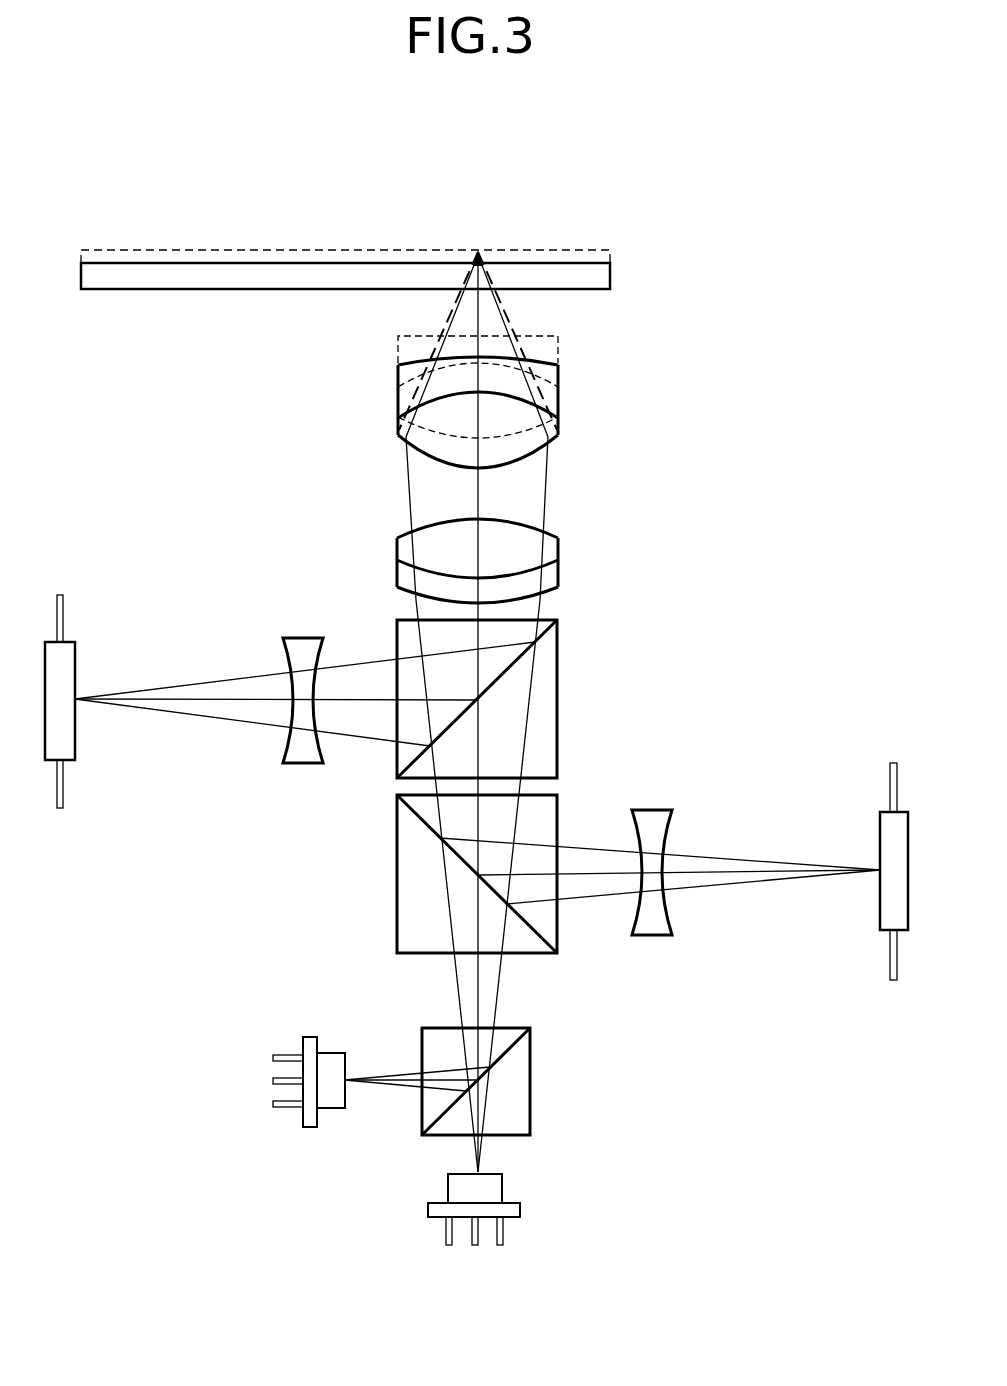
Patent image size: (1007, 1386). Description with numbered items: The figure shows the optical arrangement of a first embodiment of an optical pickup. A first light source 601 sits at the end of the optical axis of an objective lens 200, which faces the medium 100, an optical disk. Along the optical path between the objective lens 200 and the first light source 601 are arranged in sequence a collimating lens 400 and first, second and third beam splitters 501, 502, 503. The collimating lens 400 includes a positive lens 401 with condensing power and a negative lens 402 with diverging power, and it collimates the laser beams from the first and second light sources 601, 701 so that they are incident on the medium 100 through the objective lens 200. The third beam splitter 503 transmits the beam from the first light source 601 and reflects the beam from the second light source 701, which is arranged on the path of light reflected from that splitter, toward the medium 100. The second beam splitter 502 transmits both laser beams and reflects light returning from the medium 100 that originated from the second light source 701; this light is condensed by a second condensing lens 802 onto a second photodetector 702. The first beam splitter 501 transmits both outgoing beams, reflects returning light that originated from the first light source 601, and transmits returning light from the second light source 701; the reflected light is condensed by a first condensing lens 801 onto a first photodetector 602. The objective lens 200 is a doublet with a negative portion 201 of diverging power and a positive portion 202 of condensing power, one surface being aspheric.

The medium 100 is at (232, 314).
The objective lens 200 is at (579, 402).
The negative portion 201 is at (558, 372).
The positive portion 202 is at (558, 427).
The collimating lens 400 is at (579, 561).
The positive lens 401 is at (558, 542).
The negative lens 402 is at (558, 578).
The first beam splitter 501 is at (548, 704).
The second beam splitter 502 is at (407, 932).
The third beam splitter 503 is at (522, 1083).
The first light source 601 is at (512, 1210).
The first photodetector 602 is at (72, 752).
The second light source 701 is at (308, 1127).
The second photodetector 702 is at (880, 918).
The first condensing lens 801 is at (298, 763).
The second condensing lens 802 is at (652, 935).